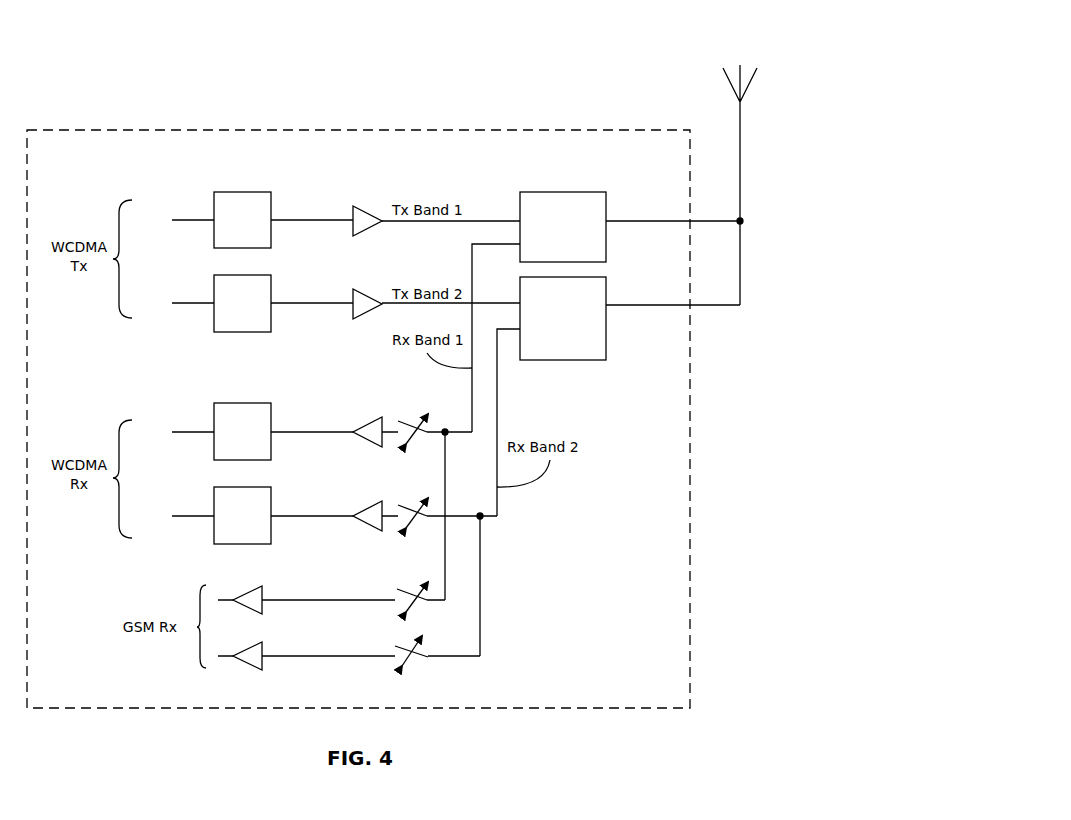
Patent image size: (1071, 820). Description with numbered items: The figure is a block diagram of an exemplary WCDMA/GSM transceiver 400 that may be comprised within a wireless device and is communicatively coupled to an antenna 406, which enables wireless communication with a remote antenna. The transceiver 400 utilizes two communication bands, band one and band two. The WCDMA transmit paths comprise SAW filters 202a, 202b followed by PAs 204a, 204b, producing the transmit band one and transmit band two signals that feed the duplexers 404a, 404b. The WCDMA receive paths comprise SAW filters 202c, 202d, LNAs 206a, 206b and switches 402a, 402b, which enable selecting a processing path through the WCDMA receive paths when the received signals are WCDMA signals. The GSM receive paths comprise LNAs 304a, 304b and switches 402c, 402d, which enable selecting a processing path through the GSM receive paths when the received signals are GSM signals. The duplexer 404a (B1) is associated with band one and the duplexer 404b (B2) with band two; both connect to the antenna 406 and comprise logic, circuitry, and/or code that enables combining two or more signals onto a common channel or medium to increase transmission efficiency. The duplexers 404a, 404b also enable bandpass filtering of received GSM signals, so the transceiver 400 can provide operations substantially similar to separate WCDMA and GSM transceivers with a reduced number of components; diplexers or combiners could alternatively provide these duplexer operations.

The WCDMA/GSM transceiver 400 is at (151, 60).
The SAW filter 202a is at (214, 201).
The SAW filter 202b is at (214, 285).
The SAW filter 202c is at (214, 413).
The SAW filter 202d is at (214, 497).
The PA 204a is at (353, 208).
The PA 204b is at (353, 291).
The LNA 206a is at (362, 426).
The LNA 206b is at (362, 510).
The LNA 304a is at (262, 592).
The LNA 304b is at (262, 648).
The switch 402a is at (414, 425).
The switch 402b is at (414, 509).
The switch 402c is at (414, 593).
The switch 402d is at (402, 668).
The duplexer 404a is at (520, 200).
The duplexer 404b is at (567, 360).
The antenna 406 is at (740, 113).